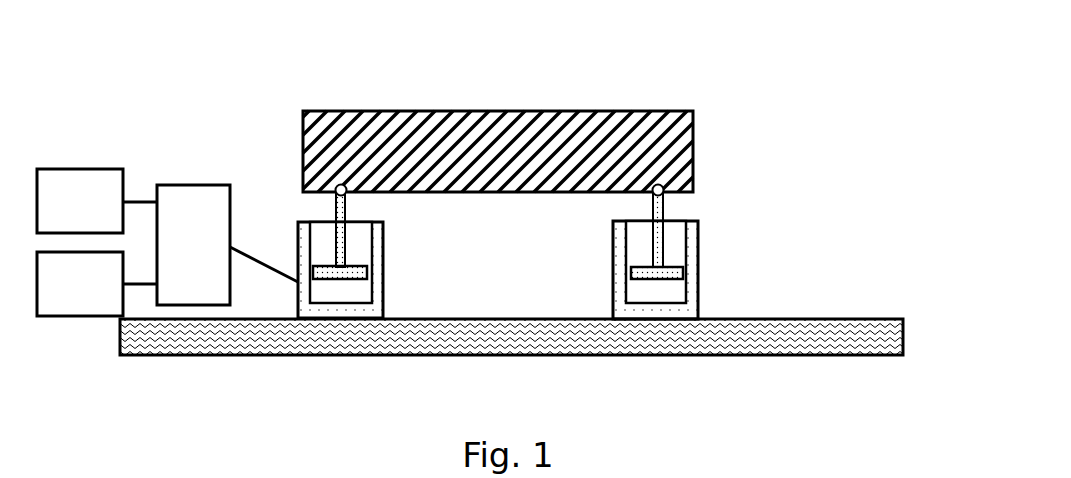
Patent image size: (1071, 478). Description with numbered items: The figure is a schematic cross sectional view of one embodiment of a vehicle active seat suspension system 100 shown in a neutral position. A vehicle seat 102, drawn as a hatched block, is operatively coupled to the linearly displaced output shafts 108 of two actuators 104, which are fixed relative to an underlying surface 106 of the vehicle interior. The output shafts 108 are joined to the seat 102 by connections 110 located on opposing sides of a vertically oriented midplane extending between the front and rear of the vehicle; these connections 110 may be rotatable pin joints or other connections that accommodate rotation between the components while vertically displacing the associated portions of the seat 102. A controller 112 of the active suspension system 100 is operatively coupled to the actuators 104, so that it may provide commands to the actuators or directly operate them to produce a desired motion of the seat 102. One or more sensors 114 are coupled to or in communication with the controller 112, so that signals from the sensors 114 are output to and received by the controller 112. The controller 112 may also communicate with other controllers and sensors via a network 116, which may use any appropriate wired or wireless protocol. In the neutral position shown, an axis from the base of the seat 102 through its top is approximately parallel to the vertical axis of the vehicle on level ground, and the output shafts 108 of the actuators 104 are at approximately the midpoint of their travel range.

The vehicle active seat suspension system 100 is at (779, 93).
The vehicle seat 102 is at (688, 114).
The actuator 104 is at (377, 302).
The underlying surface 106 is at (887, 319).
The output shaft 108 is at (347, 240).
The connection 110 is at (337, 192).
The controller 112 is at (210, 245).
The sensor 114 is at (80, 201).
The network 116 is at (80, 284).